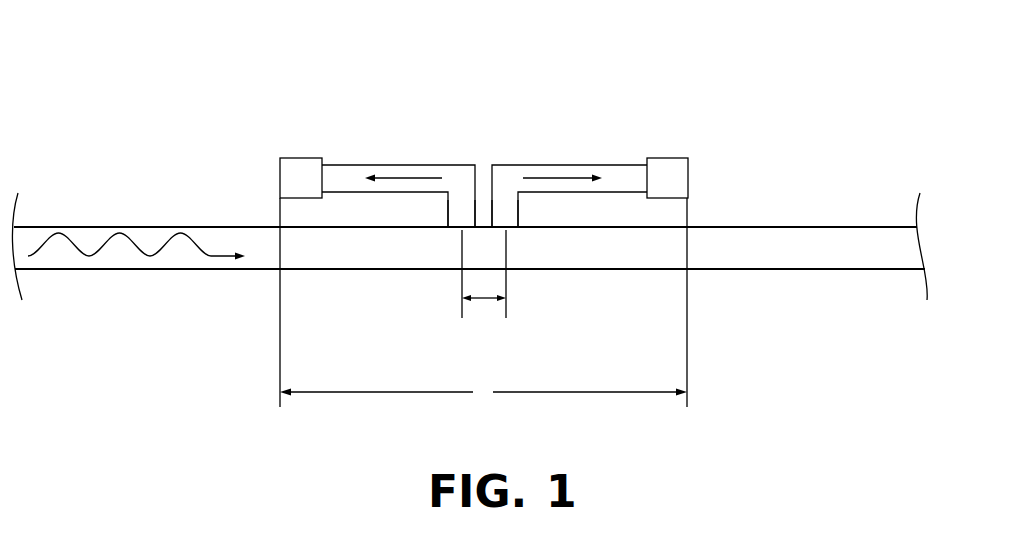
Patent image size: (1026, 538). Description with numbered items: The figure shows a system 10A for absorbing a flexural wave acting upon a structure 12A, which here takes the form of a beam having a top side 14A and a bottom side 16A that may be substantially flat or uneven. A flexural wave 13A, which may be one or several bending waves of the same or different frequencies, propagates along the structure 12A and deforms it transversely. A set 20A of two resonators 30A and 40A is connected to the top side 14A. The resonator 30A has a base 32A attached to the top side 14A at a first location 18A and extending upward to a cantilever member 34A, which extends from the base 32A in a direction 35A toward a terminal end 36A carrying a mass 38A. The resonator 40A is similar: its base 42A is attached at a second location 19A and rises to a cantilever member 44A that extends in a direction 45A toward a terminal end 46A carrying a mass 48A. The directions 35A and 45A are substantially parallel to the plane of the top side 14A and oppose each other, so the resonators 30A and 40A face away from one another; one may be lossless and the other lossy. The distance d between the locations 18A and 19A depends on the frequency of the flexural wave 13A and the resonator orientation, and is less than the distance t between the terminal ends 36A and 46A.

The system for absorbing a flexural wave 10A is at (815, 93).
The structure 12A is at (845, 235).
The flexural wave 13A is at (58, 227).
The top side 14A is at (725, 227).
The bottom side 16A is at (767, 270).
The first location 18A is at (455, 230).
The second location 19A is at (507, 230).
The set of resonators 20A is at (687, 53).
The resonator 30A is at (355, 162).
The base 32A is at (462, 207).
The cantilever member 34A is at (440, 167).
The direction 35A is at (400, 178).
The terminal end 36A is at (280, 176).
The mass 38A is at (300, 178).
The resonator 40A is at (572, 132).
The base 42A is at (507, 205).
The cantilever member 44A is at (620, 165).
The direction 45A is at (542, 165).
The terminal end 46A is at (692, 173).
The mass 48A is at (668, 175).